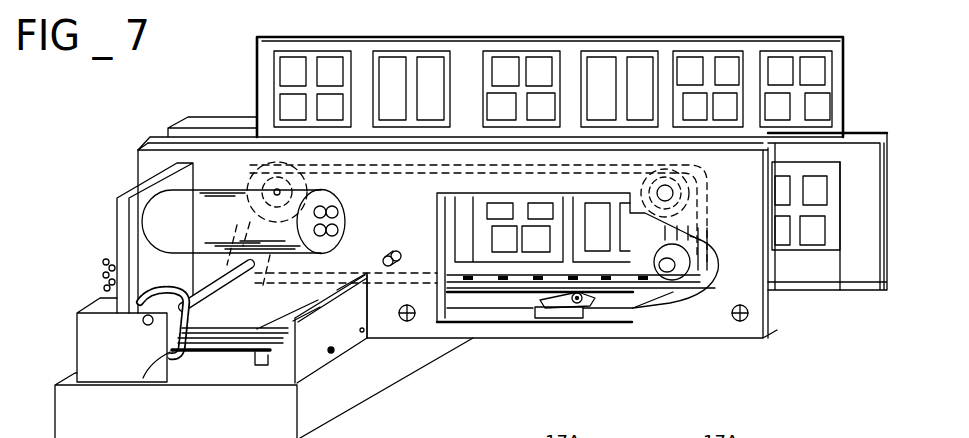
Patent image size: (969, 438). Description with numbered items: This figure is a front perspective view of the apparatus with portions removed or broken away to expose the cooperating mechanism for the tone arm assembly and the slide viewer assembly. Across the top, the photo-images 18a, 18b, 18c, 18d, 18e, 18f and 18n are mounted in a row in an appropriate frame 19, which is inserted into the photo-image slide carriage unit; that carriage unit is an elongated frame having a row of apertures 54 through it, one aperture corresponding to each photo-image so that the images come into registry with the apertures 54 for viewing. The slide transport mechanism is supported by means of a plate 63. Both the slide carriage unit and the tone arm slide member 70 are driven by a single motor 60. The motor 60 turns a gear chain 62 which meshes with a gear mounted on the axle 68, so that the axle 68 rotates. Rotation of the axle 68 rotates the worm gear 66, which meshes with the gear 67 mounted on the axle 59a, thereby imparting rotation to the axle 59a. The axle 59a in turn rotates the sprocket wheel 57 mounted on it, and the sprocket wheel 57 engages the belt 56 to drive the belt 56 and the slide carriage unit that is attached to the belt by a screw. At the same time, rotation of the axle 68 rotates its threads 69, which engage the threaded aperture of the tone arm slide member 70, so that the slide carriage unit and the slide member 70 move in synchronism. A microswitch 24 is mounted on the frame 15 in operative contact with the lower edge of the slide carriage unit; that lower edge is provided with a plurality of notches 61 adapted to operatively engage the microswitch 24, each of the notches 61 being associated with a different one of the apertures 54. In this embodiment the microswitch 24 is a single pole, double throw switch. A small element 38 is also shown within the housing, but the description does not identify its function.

The frame 15 is at (68, 418).
The photo-image 18a is at (298, 52).
The photo-image 18b is at (412, 52).
The photo-image 18c is at (523, 52).
The photo-image 18d is at (612, 52).
The photo-image 18e is at (697, 52).
The photo-image 18f is at (782, 52).
The photo-image 18n is at (800, 177).
The frame 19 is at (833, 40).
The microswitch 24 is at (557, 313).
The roller 38 is at (396, 255).
The apertures 54 is at (835, 216).
The belt 56 is at (615, 291).
The sprocket wheel 57 is at (693, 238).
The axle 59a is at (191, 296).
The motor 60 is at (192, 232).
The notches 61 is at (482, 288).
The gear chain 62 is at (103, 273).
The plate 63 is at (389, 208).
The worm gear 66 is at (163, 352).
The gear 67 is at (188, 319).
The axle 68 is at (222, 353).
The threads 69 is at (258, 367).
The tone arm slide member 70 is at (298, 320).